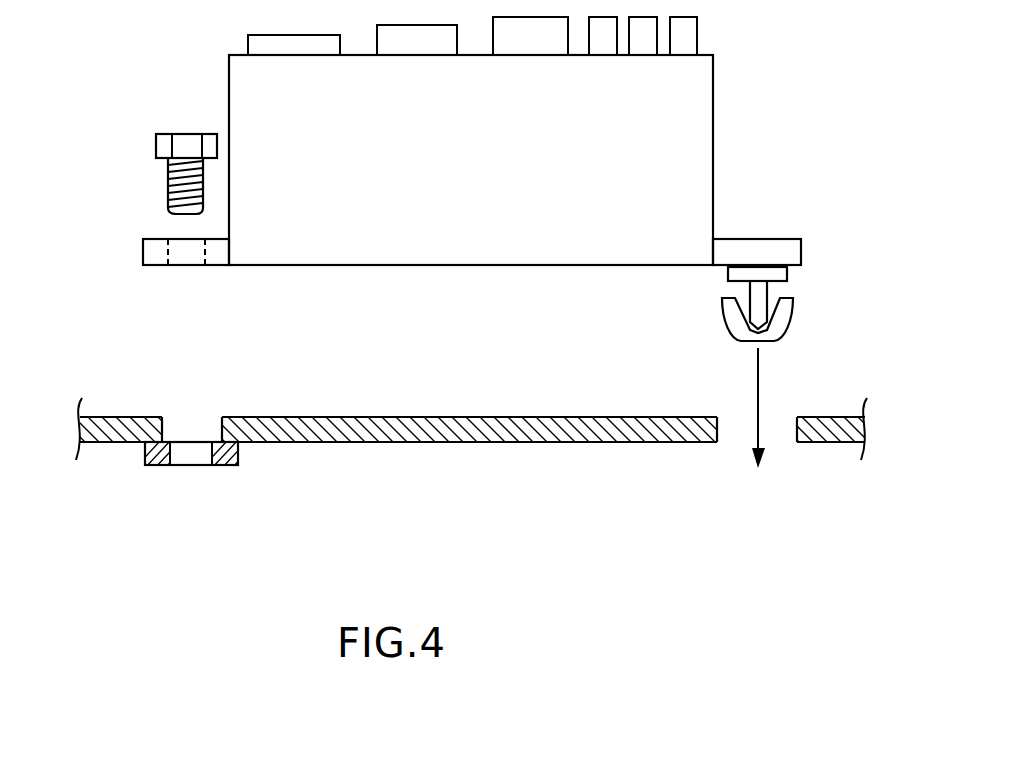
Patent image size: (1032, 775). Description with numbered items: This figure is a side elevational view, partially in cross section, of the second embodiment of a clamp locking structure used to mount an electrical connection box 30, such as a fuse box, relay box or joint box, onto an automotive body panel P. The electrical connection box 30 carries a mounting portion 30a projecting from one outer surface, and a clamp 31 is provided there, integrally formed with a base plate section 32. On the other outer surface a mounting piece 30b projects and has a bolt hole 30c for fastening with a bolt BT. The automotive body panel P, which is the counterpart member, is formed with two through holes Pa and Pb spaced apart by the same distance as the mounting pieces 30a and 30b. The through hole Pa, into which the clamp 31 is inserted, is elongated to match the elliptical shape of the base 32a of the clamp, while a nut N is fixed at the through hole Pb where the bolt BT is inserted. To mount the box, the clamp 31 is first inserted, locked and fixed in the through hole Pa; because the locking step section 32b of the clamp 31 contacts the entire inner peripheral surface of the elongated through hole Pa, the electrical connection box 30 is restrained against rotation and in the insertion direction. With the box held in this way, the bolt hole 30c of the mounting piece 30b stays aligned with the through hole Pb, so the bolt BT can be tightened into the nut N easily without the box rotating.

The electrical connection box 30 is at (688, 93).
The mounting portion 30a is at (793, 238).
The mounting piece 30b is at (144, 250).
The bolt hole 30c is at (188, 265).
The clamp 31 is at (787, 327).
The base plate section 32 is at (757, 252).
The base 32a is at (728, 275).
The locking step section 32b is at (790, 275).
The bolt BT is at (156, 142).
The nut N is at (146, 463).
The automotive body panel P is at (494, 430).
The through hole Pa is at (722, 442).
The through hole Pb is at (222, 430).